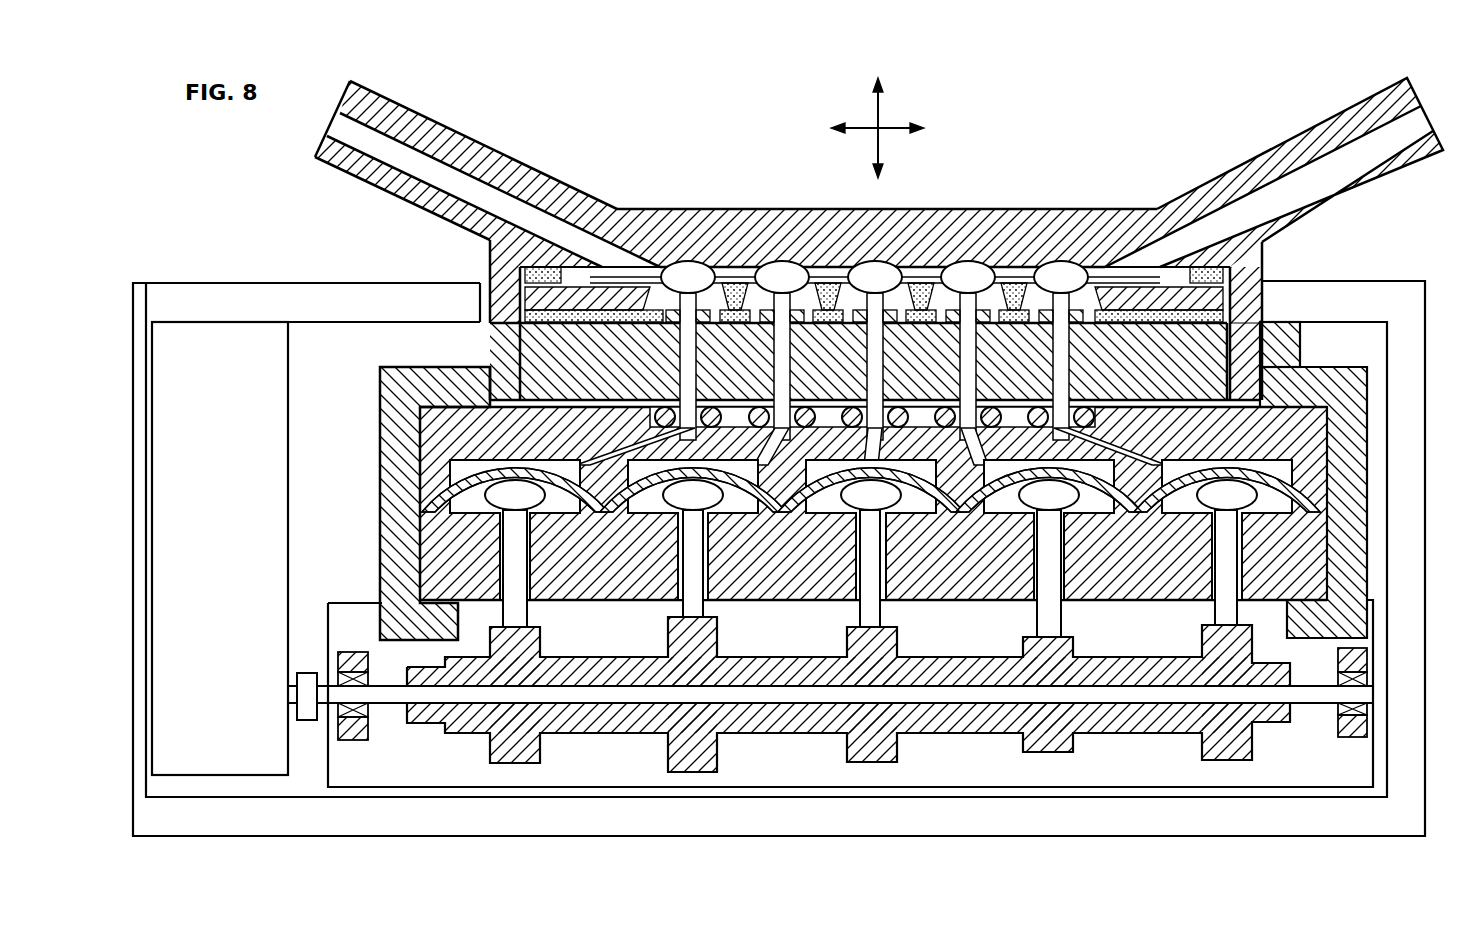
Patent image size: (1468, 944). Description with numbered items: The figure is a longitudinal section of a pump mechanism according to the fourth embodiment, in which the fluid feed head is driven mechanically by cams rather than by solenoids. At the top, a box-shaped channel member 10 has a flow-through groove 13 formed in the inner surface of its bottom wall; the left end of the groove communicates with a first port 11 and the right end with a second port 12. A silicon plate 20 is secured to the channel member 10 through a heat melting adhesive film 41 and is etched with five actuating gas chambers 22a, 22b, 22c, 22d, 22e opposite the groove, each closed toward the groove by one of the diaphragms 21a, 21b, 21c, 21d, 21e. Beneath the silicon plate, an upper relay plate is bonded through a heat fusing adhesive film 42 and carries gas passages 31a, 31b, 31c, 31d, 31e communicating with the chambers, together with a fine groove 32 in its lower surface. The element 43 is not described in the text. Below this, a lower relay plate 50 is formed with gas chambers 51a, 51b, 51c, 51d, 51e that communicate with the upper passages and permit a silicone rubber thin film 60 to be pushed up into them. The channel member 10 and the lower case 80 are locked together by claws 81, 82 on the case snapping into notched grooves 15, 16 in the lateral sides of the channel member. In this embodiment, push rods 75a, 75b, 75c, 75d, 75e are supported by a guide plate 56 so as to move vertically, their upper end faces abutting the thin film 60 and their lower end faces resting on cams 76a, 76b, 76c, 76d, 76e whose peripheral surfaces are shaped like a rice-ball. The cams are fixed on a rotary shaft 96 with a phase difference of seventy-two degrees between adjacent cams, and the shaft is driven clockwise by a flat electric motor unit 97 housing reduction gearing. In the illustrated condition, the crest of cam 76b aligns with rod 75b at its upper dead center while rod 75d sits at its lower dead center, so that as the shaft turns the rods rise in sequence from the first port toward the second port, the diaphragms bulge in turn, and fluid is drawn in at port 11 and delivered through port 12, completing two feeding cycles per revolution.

The channel member 10 is at (1180, 130).
The first port 11 is at (435, 163).
The second port 12 is at (1302, 163).
The flow-through groove 13 is at (622, 266).
The notched groove 15 is at (1248, 380).
The notched groove 16 is at (488, 365).
The silicon plate 20 is at (520, 280).
The diaphragm 21a is at (667, 278).
The diaphragm 21b is at (762, 278).
The diaphragm 21c is at (858, 278).
The diaphragm 21d is at (950, 278).
The diaphragm 21e is at (1043, 278).
The actuating gas chamber 22a is at (706, 305).
The actuating gas chamber 22b is at (800, 305).
The actuating gas chamber 22c is at (893, 305).
The actuating gas chamber 22d is at (986, 305).
The actuating gas chamber 22e is at (1079, 305).
The gas passage 31a is at (688, 293).
The gas passage 31b is at (782, 293).
The gas passage 31c is at (875, 293).
The gas passage 31d is at (968, 293).
The gas passage 31e is at (1061, 293).
The fine groove 32 is at (1262, 320).
The heat melting adhesive film 41 is at (498, 262).
The heat fusing adhesive film 42 is at (1262, 262).
The guide block 43 is at (500, 385).
The lower relay plate 50 is at (1310, 433).
The gas chamber 51a is at (455, 470).
The gas chamber 51b is at (636, 588).
The gas chamber 51c is at (812, 588).
The gas chamber 51d is at (992, 588).
The gas chamber 51e is at (1183, 588).
The guide plate 56 is at (958, 626).
The thin film 60 is at (1307, 490).
The push rod 75a is at (522, 612).
The push rod 75b is at (703, 612).
The push rod 75c is at (880, 612).
The push rod 75d is at (1060, 612).
The push rod 75e is at (1236, 625).
The cam 76a is at (490, 750).
The cam 76b is at (668, 754).
The cam 76c is at (847, 752).
The cam 76d is at (1023, 752).
The cam 76e is at (1202, 750).
The lower case 80 is at (1347, 575).
The claw 81 is at (1254, 382).
The claw 82 is at (493, 388).
The rotary shaft 96 is at (407, 722).
The flat electric motor unit 97 is at (226, 402).